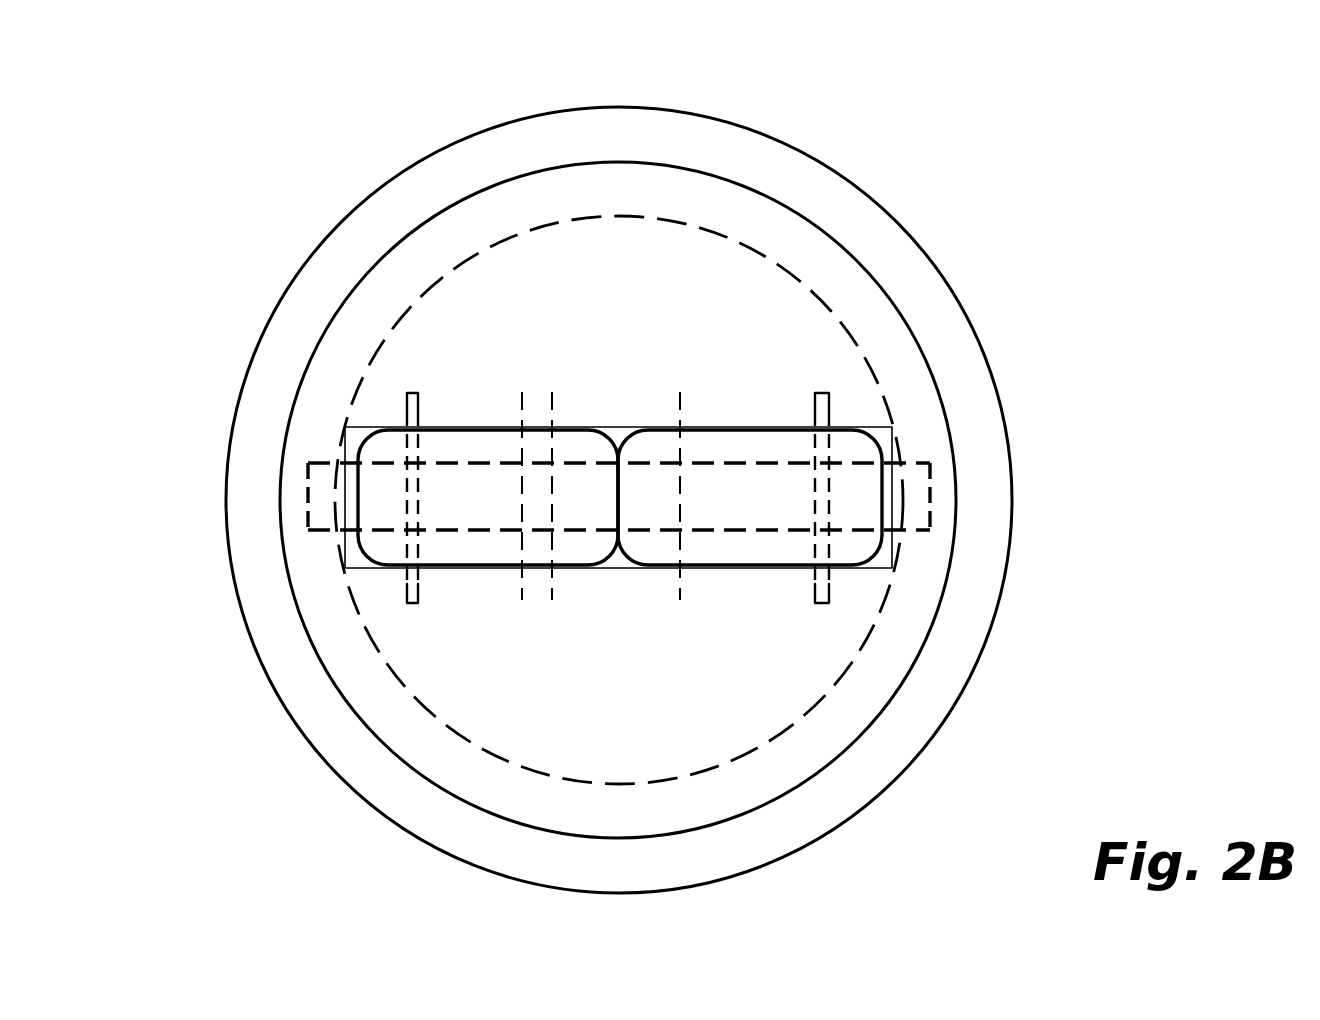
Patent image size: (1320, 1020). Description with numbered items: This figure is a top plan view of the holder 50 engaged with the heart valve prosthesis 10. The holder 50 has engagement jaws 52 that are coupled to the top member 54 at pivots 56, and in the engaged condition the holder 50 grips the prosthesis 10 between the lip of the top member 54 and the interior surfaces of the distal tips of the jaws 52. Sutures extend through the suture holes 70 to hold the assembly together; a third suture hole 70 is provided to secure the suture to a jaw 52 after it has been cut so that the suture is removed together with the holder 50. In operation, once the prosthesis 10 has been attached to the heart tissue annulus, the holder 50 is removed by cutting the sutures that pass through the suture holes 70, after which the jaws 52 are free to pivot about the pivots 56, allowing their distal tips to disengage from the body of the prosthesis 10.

The heart valve prosthesis 10 is at (662, 478).
The holder 50 is at (833, 207).
The engagement jaws 52 is at (470, 506).
The top member 54 is at (773, 675).
The pivots 56 is at (391, 397).
The suture holes 70 is at (530, 377).